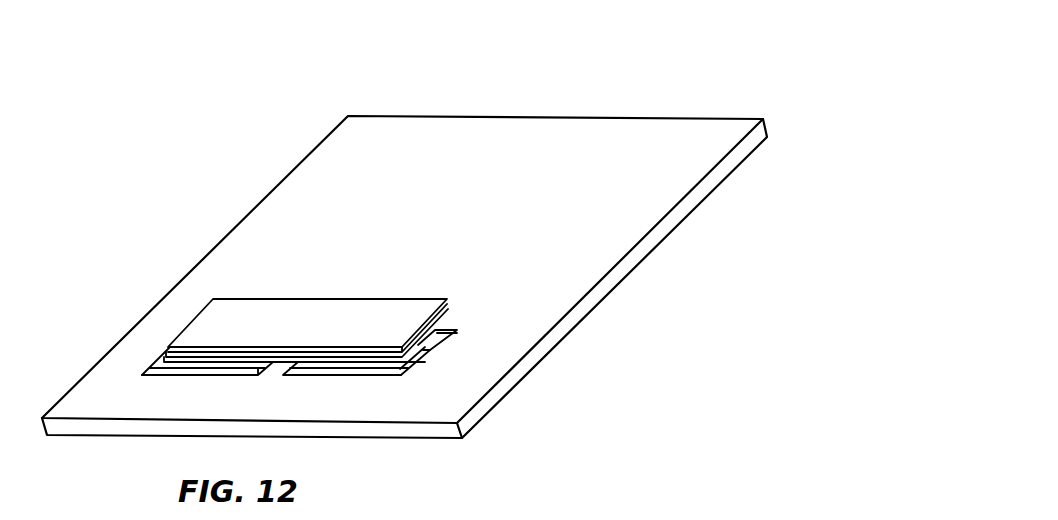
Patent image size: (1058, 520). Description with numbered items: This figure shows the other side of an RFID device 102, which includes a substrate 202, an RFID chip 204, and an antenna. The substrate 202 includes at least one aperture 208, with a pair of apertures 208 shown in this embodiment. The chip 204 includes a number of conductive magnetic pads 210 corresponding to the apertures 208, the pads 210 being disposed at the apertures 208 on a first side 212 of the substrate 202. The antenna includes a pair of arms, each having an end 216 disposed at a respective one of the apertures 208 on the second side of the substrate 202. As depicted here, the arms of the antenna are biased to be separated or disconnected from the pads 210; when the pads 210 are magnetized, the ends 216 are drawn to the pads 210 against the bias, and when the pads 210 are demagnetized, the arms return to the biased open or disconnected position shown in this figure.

The RFID device 102 is at (625, 83).
The substrate 202 is at (735, 116).
The first side 212 is at (690, 173).
The RFID chip 204 is at (203, 330).
The conductive magnetic pads 210 is at (160, 358).
The apertures 208 is at (157, 367).
The ends 216 is at (213, 373).